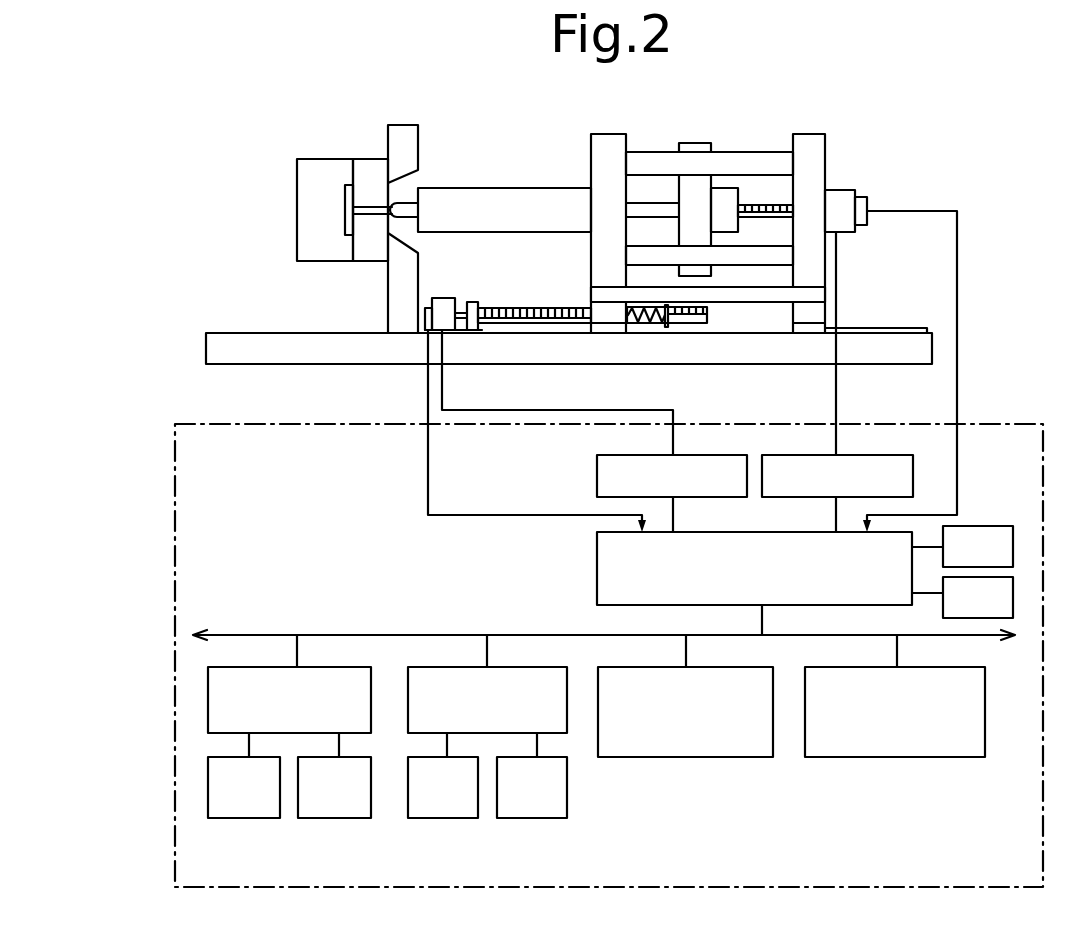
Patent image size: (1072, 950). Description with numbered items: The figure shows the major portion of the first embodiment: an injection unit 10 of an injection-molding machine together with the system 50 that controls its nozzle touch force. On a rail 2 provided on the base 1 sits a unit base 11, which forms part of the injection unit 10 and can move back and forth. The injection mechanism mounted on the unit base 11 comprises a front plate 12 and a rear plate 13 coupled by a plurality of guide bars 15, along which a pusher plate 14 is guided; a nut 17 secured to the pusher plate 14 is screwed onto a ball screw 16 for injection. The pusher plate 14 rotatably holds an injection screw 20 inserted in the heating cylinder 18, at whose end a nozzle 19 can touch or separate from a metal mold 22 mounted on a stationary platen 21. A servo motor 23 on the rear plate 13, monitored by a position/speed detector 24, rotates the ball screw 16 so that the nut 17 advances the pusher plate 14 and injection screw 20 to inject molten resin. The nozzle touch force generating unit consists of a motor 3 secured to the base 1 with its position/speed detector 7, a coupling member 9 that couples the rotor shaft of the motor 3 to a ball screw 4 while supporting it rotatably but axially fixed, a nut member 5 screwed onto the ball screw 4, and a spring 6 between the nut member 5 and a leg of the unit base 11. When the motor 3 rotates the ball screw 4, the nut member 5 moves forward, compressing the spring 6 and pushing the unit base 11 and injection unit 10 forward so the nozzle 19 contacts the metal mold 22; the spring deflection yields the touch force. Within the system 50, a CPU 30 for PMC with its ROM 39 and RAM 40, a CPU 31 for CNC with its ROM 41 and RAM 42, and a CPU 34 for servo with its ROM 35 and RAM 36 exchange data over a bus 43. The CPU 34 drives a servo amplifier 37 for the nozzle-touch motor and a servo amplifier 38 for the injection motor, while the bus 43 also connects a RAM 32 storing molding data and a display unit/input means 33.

The base 1 is at (292, 353).
The rail 2 is at (895, 328).
The motor 3 is at (445, 298).
The ball screw 4 is at (533, 308).
The nut member 5 is at (666, 327).
The spring 6 is at (648, 327).
The position/speed detector 7 is at (423, 318).
The coupling member 9 is at (473, 302).
The injection unit 10 is at (901, 112).
The unit base 11 is at (818, 297).
The front plate 12 is at (609, 136).
The rear plate 13 is at (812, 136).
The pusher plate 14 is at (697, 143).
The guide bars 15 is at (655, 151).
The ball screw 16 is at (772, 205).
The nut 17 is at (727, 187).
The heating cylinder 18 is at (505, 188).
The nozzle 19 is at (398, 206).
The injection screw 20 is at (643, 200).
The stationary platen 21 is at (403, 132).
The metal mold 22 is at (328, 159).
The servo motor 23 is at (840, 190).
The position/speed detector 24 is at (870, 197).
The CPU for PMC 30 is at (371, 697).
The CPU for CNC 31 is at (567, 697).
The RAM storing molding data 32 is at (717, 757).
The display unit/input means 33 is at (932, 757).
The CPU for servo 34 is at (597, 572).
The ROM 35 is at (1013, 536).
The RAM 36 is at (1013, 608).
The servo amplifier 37 is at (597, 476).
The servo amplifier 38 is at (913, 478).
The ROM 39 is at (248, 818).
The RAM 40 is at (338, 818).
The ROM 41 is at (447, 818).
The RAM 42 is at (535, 818).
The bus 43 is at (255, 635).
The system for controlling the nozzle touch force 50 is at (978, 423).